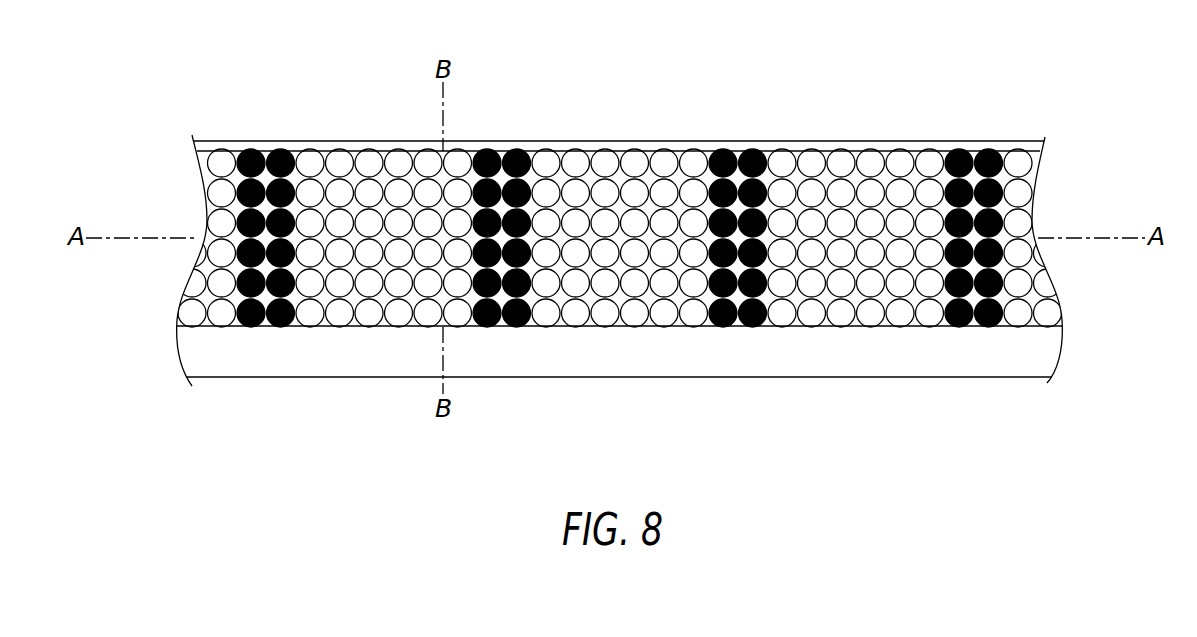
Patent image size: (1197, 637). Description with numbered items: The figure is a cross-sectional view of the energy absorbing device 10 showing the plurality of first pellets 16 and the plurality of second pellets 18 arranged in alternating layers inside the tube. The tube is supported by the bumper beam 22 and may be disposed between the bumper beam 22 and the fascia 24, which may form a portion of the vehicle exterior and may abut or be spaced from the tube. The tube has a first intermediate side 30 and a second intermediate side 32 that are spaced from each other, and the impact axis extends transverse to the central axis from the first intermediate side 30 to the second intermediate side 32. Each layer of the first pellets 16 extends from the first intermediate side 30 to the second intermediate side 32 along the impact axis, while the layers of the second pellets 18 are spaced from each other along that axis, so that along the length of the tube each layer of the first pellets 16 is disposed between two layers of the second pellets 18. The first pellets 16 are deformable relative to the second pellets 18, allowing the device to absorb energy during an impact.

The energy absorbing device 10 is at (83, 83).
The first pellets 16 is at (248, 150).
The second pellets 18 is at (310, 313).
The bumper beam 22 is at (965, 378).
The fascia 24 is at (913, 142).
The first intermediate side 30 is at (355, 150).
The second intermediate side 32 is at (385, 327).